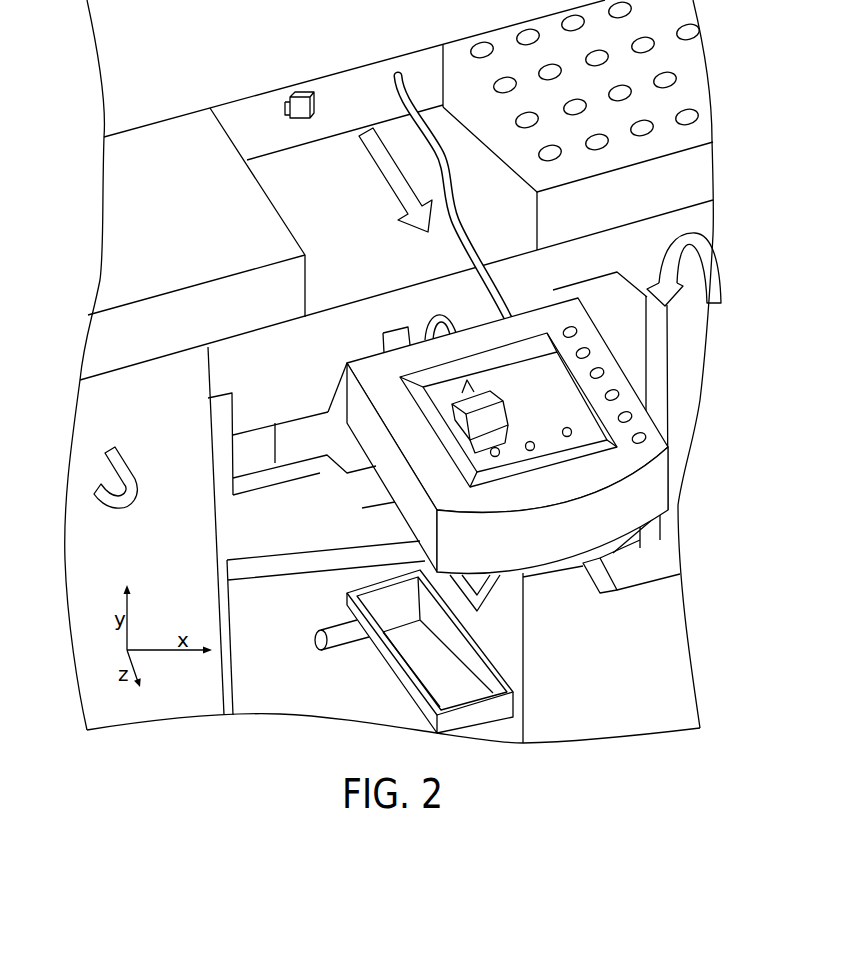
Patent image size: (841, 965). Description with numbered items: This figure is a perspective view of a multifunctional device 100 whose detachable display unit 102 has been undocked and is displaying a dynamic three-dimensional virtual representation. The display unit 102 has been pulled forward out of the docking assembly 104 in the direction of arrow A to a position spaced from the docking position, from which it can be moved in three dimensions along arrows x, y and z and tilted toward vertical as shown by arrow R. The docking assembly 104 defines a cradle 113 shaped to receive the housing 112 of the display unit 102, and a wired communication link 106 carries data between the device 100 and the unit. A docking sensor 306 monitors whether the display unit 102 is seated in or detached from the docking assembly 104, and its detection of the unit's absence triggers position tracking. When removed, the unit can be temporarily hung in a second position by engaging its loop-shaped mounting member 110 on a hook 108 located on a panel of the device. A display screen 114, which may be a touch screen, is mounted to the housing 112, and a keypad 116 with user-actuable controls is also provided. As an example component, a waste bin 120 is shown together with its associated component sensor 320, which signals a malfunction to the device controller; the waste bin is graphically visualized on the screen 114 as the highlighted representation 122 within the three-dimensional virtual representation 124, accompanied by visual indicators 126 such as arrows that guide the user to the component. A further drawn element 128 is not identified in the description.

The multifunctional device 100 is at (74, 63).
The detachable display unit 102 is at (672, 360).
The docking assembly 104 is at (336, 294).
The wired communication link 106 is at (497, 284).
The hook 108 is at (128, 437).
The mounting member 110 is at (427, 323).
The housing 112 is at (352, 405).
The cradle 113 is at (273, 162).
The display screen 114 is at (553, 440).
The keypad 116 is at (582, 337).
The waste bin 120 is at (513, 718).
The malfunctioning component representation 122 is at (505, 436).
The 3D virtual representation 124 is at (470, 403).
The visual indicators 126 is at (530, 450).
The cable 128 is at (527, 368).
The docking sensor 306 is at (306, 95).
The component sensor 320 is at (316, 643).